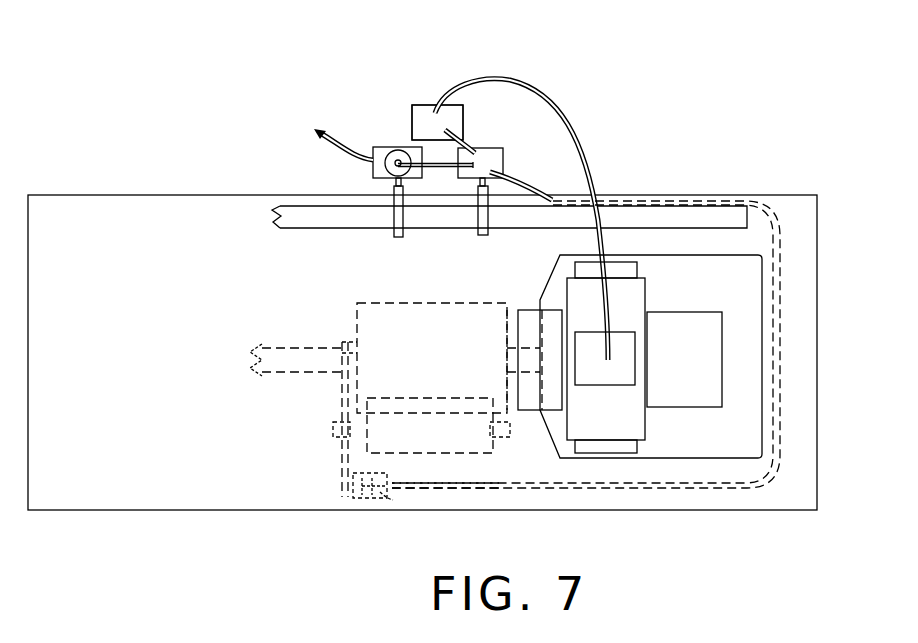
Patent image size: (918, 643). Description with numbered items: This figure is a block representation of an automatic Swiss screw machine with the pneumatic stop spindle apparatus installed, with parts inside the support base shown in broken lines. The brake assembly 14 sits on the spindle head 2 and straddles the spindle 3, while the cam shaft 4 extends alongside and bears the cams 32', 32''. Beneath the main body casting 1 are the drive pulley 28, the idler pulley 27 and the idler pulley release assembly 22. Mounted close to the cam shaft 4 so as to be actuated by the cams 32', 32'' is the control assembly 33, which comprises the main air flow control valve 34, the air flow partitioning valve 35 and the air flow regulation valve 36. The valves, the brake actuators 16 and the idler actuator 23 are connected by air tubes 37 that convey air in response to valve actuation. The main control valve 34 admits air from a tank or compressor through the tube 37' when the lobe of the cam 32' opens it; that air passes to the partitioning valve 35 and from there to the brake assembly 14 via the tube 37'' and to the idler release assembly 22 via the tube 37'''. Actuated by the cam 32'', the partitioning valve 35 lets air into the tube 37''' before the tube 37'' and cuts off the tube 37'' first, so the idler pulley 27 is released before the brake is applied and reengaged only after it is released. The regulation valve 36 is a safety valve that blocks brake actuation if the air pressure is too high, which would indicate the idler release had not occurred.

The main body casting 1 is at (821, 478).
The spindle head 2 is at (750, 445).
The spindle 3 is at (703, 398).
The cam shaft 4 is at (697, 213).
The brake assembly 14 is at (659, 417).
The brake actuators 16 is at (612, 385).
The idler pulley release assembly 22 is at (366, 512).
The idler actuator 23 is at (400, 511).
The idler pulley 27 is at (477, 473).
The drive pulley 28 is at (370, 315).
The cam 32' is at (359, 223).
The cam 32'' is at (496, 230).
The control assembly 33 is at (411, 85).
The main air flow control valve 34 is at (372, 173).
The air flow partitioning valve 35 is at (533, 162).
The air flow regulation valve 36 is at (412, 120).
The air tubes 37 is at (435, 218).
The tube 37' is at (311, 128).
The tube 37'' is at (523, 213).
The tube 37''' is at (586, 316).